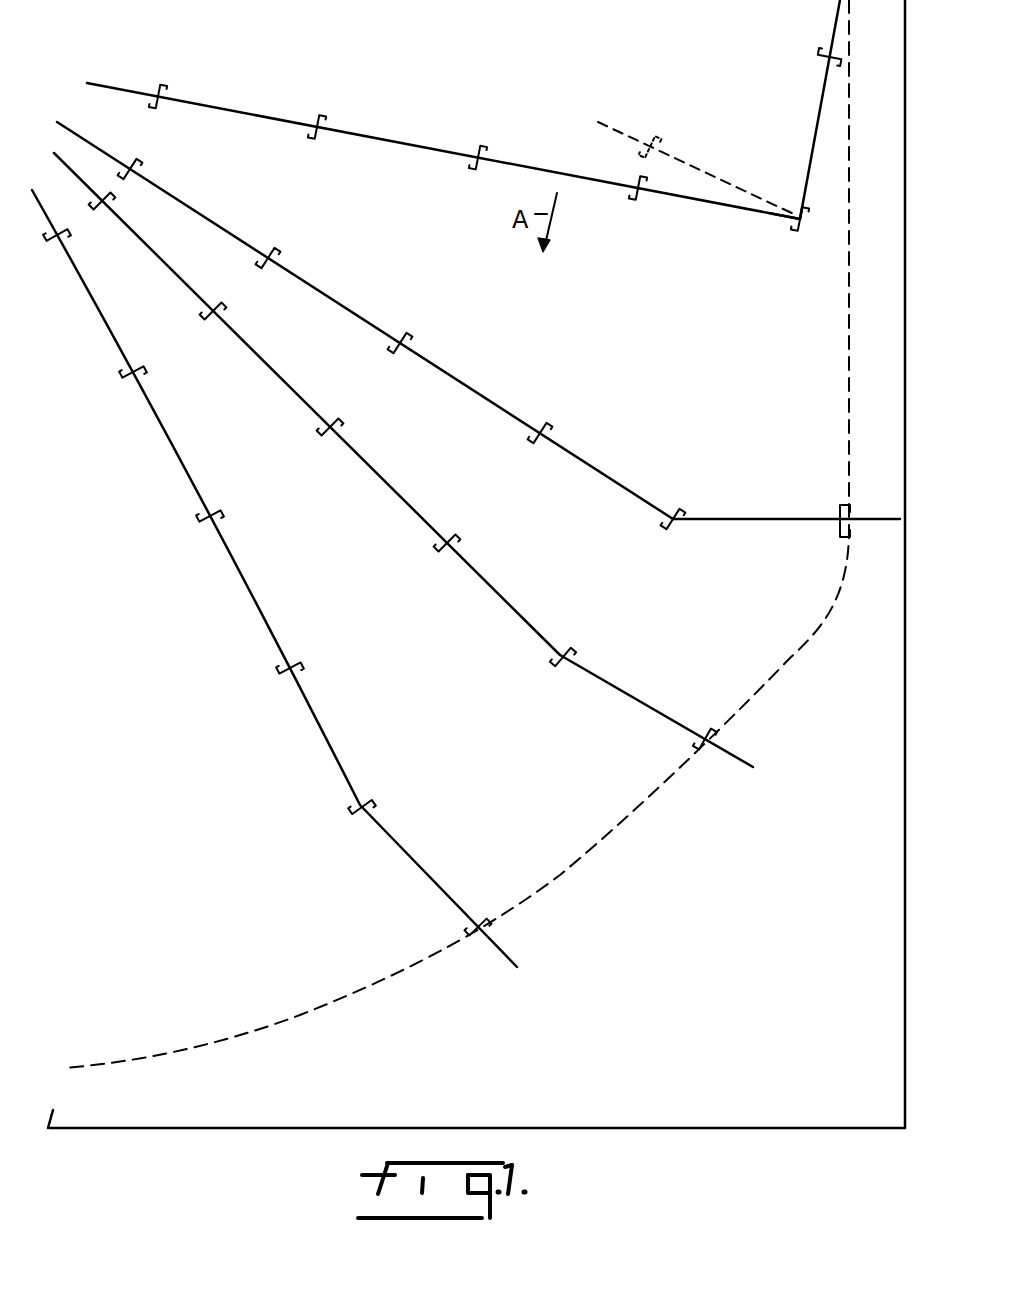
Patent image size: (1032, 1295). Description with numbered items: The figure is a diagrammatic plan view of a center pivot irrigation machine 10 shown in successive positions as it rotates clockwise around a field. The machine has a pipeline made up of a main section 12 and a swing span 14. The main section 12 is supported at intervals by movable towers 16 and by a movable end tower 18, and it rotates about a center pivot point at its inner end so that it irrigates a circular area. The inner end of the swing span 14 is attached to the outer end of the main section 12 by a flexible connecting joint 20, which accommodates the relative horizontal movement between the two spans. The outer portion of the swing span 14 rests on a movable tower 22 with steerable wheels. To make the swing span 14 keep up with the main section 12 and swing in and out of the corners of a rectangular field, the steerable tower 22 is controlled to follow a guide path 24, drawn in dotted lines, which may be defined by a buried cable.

The center pivot irrigation machine 10 is at (421, 124).
The main section 12 is at (432, 150).
The swing span 14 is at (815, 121).
The movable towers 16 is at (313, 120).
The movable end tower 18 is at (795, 229).
The flexible connecting joint 20 is at (796, 208).
The movable tower having steerable wheels 22 is at (818, 58).
The guide path 24 is at (848, 283).